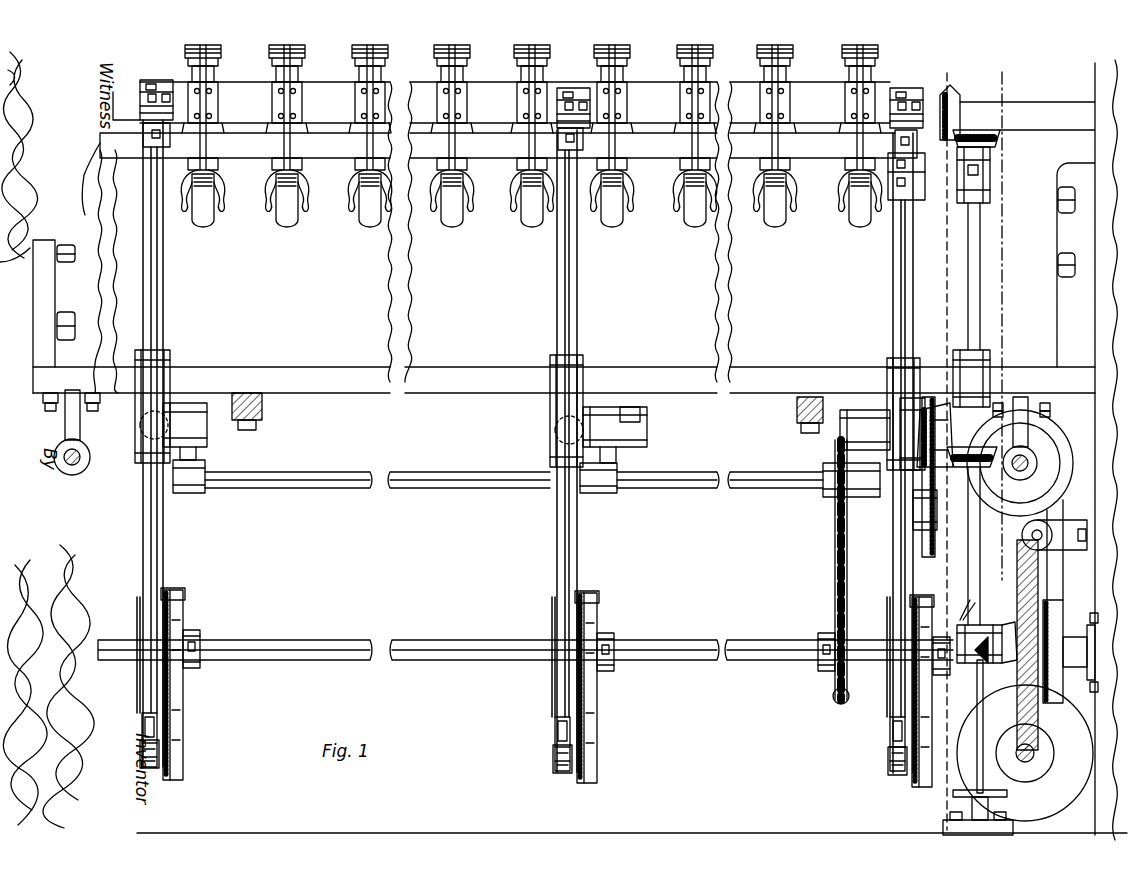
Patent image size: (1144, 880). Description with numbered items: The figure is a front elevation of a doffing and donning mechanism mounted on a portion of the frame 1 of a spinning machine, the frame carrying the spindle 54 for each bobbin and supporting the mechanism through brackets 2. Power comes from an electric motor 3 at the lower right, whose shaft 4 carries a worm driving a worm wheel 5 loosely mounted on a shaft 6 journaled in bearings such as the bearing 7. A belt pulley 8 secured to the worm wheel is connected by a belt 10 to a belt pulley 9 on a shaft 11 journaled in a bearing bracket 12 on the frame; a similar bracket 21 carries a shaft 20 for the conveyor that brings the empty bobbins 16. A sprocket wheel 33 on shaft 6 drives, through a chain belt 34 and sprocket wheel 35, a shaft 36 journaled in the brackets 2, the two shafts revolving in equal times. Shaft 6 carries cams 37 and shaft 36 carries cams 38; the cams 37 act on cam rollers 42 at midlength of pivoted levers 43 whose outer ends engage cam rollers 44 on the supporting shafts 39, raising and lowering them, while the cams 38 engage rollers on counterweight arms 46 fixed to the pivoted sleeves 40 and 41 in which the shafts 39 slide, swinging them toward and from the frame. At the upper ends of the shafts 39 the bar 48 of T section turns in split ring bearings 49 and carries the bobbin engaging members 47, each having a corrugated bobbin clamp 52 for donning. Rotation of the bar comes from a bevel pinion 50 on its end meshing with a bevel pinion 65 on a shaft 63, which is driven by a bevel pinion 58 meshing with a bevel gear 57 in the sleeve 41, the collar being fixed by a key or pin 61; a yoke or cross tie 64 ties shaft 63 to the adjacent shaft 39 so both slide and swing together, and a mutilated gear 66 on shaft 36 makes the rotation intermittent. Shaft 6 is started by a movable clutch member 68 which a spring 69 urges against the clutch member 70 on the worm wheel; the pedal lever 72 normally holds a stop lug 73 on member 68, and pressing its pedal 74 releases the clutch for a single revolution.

The frame 1 is at (369, 376).
The brackets 2 is at (216, 460).
The electric motor 3 is at (1072, 752).
The shaft 4 is at (1036, 765).
The worm wheel 5 is at (1038, 728).
The shaft 6 is at (372, 645).
The bearing 7 is at (1070, 650).
The belt pulley 8 is at (1060, 613).
The belt pulley 9 is at (1062, 455).
The belt 10 is at (1062, 530).
The shaft 11 is at (1028, 464).
The bearing bracket 12 is at (1030, 410).
The empty bobbins 16 is at (378, 48).
The shaft 20 is at (76, 478).
The bracket 21 is at (80, 435).
The sprocket wheel 33 is at (836, 702).
The chain belt 34 is at (834, 592).
The sprocket wheel 35 is at (832, 504).
The shaft 36 is at (328, 473).
The cams 37 is at (178, 623).
The cams 38 is at (185, 502).
The supporting shafts 39 is at (894, 292).
The sleeve 40 is at (172, 365).
The sleeve 41 is at (887, 370).
The cam rollers 42 is at (175, 590).
The pivoted levers 43 is at (152, 770).
The cam rollers 44 is at (145, 722).
The counterweight arms 46 is at (135, 450).
The bobbin engaging members 47 is at (356, 84).
The bar 48 is at (420, 120).
The split ring bearings 49 is at (158, 86).
The bevel pinion 50 is at (956, 92).
The bobbin clamp 52 is at (221, 178).
The spindle 54 is at (380, 70).
The bevel gear 57 is at (944, 402).
The bevel pinion 58 is at (992, 470).
The key or pin 61 is at (917, 403).
The shaft 63 is at (967, 268).
The yoke or cross tie 64 is at (938, 178).
The bevel pinion 65 is at (966, 130).
The mutilated gear 66 is at (929, 560).
The movable clutch member 68 is at (976, 625).
The spring 69 is at (966, 620).
The clutch member 70 is at (1013, 620).
The pedal lever 72 is at (980, 724).
The stop lug 73 is at (973, 662).
The pedal 74 is at (1000, 793).